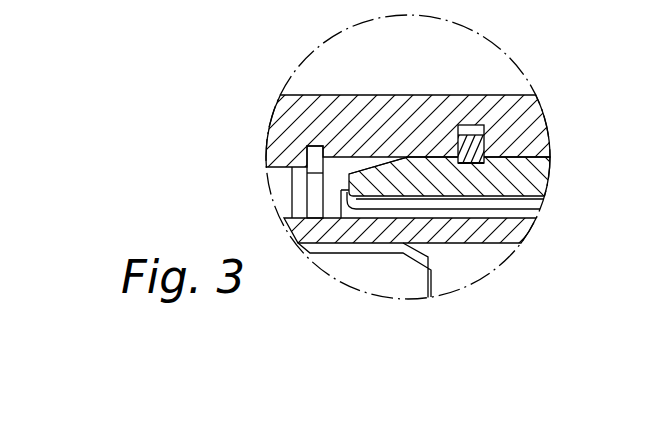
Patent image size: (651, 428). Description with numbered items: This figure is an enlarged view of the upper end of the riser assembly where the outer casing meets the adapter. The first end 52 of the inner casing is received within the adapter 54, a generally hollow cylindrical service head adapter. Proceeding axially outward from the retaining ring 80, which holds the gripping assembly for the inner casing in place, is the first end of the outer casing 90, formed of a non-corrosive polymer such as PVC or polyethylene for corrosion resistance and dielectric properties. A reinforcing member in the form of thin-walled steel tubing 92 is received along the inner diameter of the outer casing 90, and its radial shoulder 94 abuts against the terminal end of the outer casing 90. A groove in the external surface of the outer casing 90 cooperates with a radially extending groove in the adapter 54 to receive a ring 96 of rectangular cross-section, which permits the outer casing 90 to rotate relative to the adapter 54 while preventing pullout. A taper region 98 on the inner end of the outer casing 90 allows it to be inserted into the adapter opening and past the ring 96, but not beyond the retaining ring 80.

The first end of the inner casing 52 is at (507, 230).
The adapter 54 is at (528, 130).
The retaining ring 80 is at (307, 160).
The outer casing 90 is at (528, 180).
The thin-walled steel tubing 92 is at (537, 203).
The radial shoulder 94 is at (340, 192).
The ring 96 is at (482, 128).
The taper region 98 is at (375, 165).